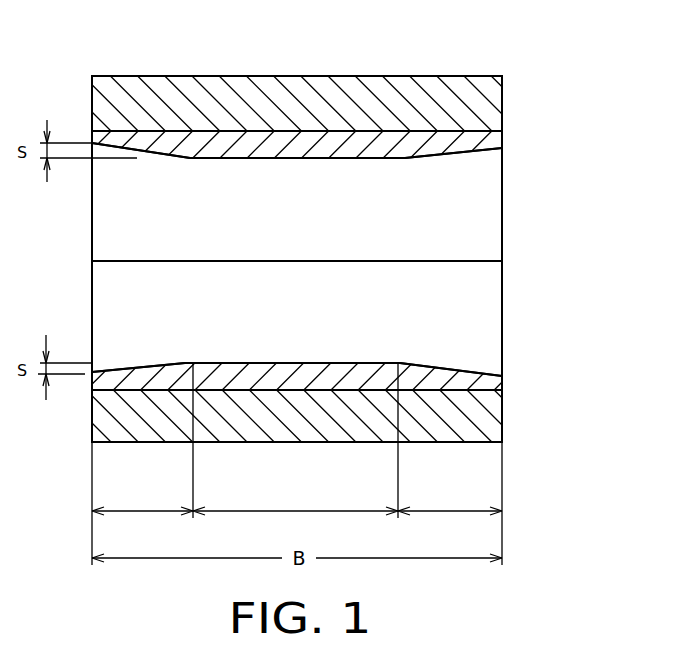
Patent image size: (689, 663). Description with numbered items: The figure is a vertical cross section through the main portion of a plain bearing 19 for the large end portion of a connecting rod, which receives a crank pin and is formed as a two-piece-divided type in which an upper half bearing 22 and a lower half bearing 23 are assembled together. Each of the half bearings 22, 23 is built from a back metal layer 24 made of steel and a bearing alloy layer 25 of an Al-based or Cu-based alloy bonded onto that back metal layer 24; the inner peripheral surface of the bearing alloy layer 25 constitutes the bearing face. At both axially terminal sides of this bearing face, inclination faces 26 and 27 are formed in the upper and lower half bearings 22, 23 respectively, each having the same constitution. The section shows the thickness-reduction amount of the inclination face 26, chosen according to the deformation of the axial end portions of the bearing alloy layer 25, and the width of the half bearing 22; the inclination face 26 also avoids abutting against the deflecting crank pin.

The plain bearing 19 is at (548, 73).
The upper half bearing 22 is at (518, 108).
The lower half bearing 23 is at (517, 417).
The back metal layer 24 is at (412, 76).
The bearing alloy layer 25 is at (288, 159).
The inclination face 26 is at (138, 158).
The inclination face 27 is at (137, 367).